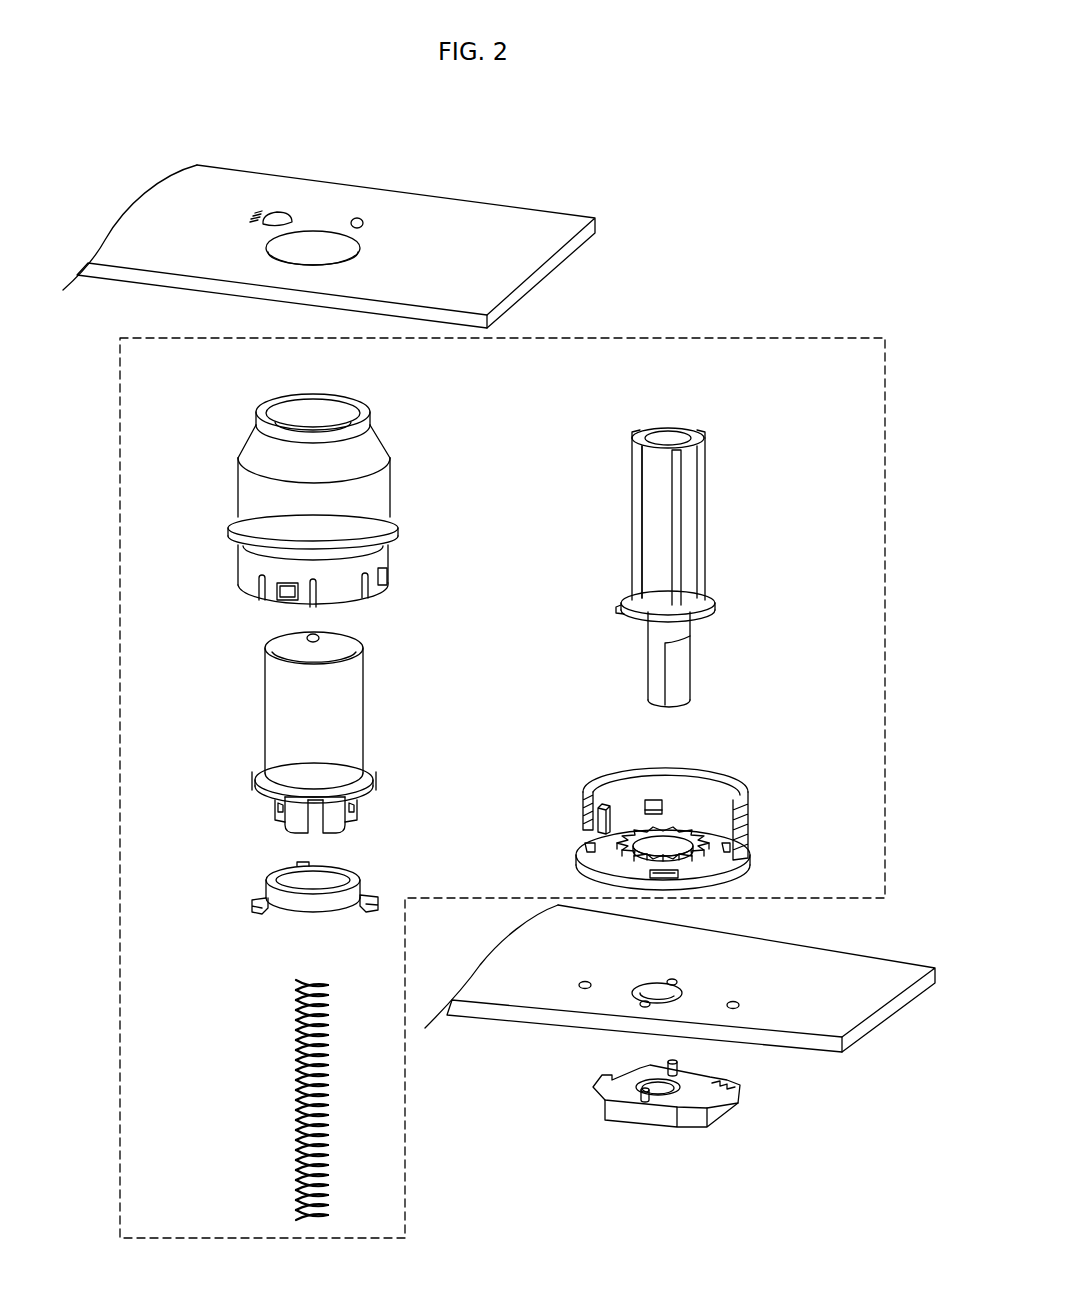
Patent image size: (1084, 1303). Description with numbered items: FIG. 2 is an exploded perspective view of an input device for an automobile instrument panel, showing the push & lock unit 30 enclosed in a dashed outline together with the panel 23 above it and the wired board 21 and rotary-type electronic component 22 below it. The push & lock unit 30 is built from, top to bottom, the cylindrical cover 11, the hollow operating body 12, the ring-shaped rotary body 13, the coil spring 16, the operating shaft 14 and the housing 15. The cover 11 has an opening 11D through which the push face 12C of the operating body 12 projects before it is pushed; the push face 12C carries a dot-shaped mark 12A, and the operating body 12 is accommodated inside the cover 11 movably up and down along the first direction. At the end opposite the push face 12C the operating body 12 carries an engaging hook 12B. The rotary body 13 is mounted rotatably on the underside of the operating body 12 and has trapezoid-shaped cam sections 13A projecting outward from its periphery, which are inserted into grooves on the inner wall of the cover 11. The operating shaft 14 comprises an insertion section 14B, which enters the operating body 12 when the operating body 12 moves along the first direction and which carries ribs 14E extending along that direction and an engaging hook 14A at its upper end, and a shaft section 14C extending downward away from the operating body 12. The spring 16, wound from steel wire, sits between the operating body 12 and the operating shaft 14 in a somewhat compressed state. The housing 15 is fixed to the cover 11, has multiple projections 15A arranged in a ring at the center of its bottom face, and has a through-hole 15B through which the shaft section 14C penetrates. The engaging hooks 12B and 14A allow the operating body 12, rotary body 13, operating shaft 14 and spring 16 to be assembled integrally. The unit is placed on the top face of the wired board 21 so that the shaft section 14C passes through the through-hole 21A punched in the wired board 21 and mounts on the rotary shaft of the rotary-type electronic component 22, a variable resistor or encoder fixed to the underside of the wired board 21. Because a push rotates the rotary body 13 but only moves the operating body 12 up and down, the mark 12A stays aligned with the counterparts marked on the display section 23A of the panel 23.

The cover 11 is at (237, 493).
The opening 11D is at (353, 415).
The operating body 12 is at (255, 710).
The mark 12A is at (320, 632).
The engaging hook 12B is at (358, 815).
The push face 12C is at (283, 643).
The rotary body 13 is at (262, 877).
The cam sections 13A is at (347, 912).
The operating shaft 14 is at (715, 528).
The engaging hook 14A is at (635, 442).
The insertion section 14B is at (703, 480).
The shaft section 14C is at (690, 680).
The ribs 14E is at (638, 510).
The housing 15 is at (753, 833).
The projections 15A is at (662, 827).
The through-hole 15B is at (660, 848).
The spring 16 is at (295, 1063).
The wired board 21 is at (803, 1060).
The through-hole 21A is at (672, 990).
The rotary-type electronic component 22 is at (638, 1123).
The panel 23 is at (548, 213).
The display section 23A is at (390, 230).
The push & lock unit 30 is at (782, 342).